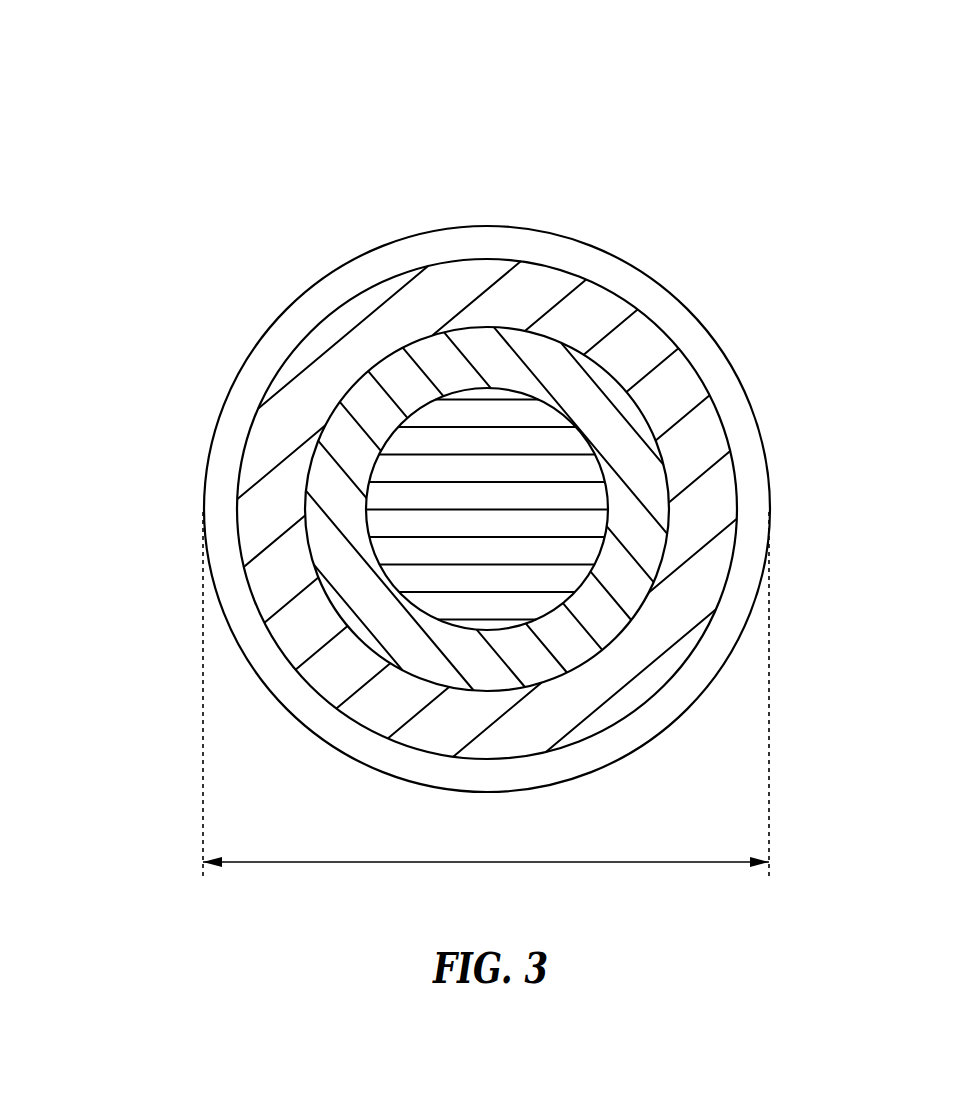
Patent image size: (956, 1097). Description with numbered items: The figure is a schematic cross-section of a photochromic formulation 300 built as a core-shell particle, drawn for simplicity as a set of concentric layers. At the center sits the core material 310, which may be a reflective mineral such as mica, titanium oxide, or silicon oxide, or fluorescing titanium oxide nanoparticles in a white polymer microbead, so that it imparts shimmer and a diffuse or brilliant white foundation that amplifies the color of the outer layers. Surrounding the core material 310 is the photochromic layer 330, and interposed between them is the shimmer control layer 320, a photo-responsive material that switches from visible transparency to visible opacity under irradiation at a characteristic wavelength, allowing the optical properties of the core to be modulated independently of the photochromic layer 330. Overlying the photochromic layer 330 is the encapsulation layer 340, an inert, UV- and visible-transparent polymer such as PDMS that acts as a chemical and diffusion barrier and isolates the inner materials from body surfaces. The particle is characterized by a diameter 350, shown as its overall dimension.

The photochromic formulation 300 is at (733, 58).
The core material 310 is at (460, 389).
The shimmer control layer 320 is at (615, 378).
The photochromic layer 330 is at (320, 322).
The encapsulation layer 340 is at (213, 418).
The diameter 350 is at (486, 696).